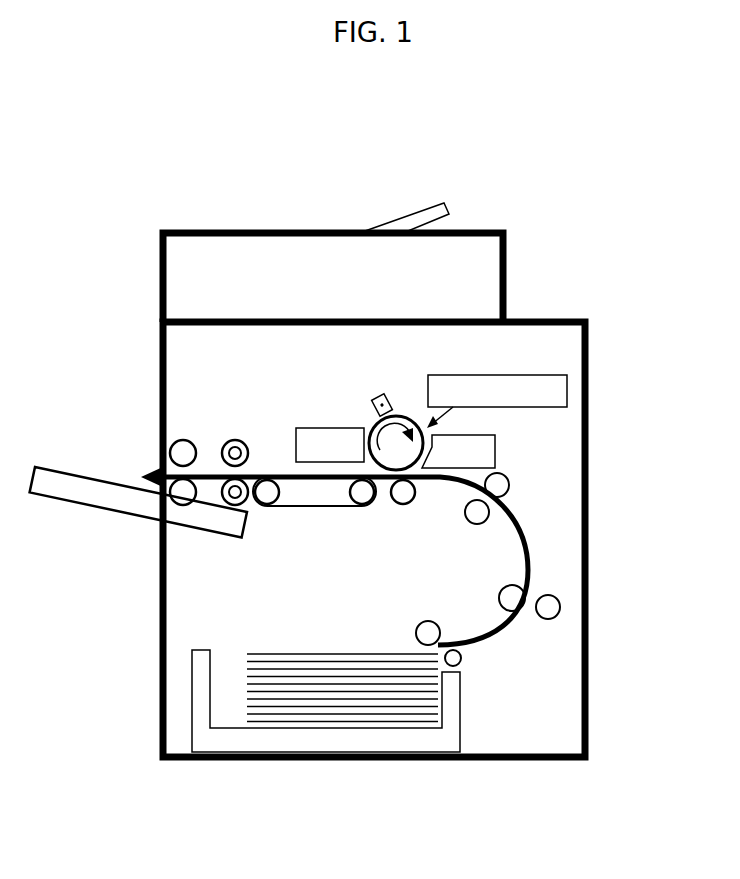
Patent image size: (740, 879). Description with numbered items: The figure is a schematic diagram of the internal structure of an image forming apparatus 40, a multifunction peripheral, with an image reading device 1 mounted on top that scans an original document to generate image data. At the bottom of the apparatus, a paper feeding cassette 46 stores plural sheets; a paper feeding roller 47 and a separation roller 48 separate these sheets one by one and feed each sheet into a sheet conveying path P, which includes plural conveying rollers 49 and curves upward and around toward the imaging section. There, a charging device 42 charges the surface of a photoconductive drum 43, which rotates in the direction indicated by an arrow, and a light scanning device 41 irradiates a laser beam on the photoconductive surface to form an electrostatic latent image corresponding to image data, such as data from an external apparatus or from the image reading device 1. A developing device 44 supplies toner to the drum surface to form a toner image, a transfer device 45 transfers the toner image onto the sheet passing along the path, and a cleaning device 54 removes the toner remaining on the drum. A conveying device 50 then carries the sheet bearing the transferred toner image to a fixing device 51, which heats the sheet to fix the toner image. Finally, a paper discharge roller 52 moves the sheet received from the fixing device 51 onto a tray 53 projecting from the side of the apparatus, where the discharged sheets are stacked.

The image reading device 1 is at (473, 280).
The image forming apparatus 40 is at (598, 714).
The light scanning device 41 is at (550, 393).
The charging device 42 is at (377, 394).
The photoconductive drum 43 is at (369, 420).
The developing device 44 is at (475, 448).
The transfer device 45 is at (402, 505).
The paper feeding cassette 46 is at (382, 737).
The paper feeding roller 47 is at (417, 629).
The separation roller 48 is at (457, 667).
The conveying rollers 49 is at (508, 492).
The conveying device 50 is at (295, 511).
The fixing device 51 is at (235, 440).
The paper discharge roller 52 is at (183, 440).
The tray 53 is at (73, 492).
The cleaning device 54 is at (310, 436).
The sheet conveying path P is at (528, 557).